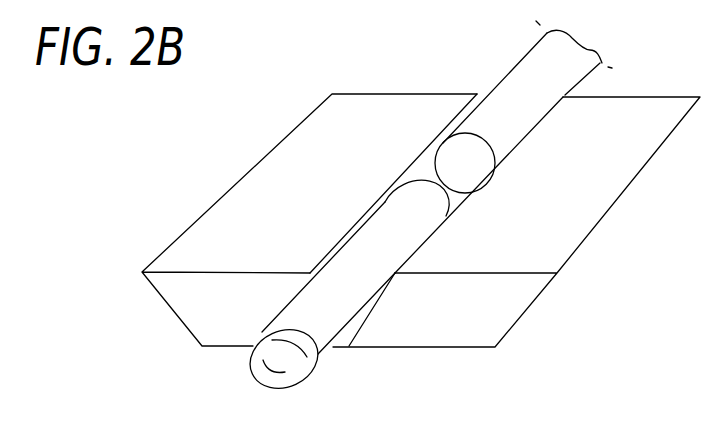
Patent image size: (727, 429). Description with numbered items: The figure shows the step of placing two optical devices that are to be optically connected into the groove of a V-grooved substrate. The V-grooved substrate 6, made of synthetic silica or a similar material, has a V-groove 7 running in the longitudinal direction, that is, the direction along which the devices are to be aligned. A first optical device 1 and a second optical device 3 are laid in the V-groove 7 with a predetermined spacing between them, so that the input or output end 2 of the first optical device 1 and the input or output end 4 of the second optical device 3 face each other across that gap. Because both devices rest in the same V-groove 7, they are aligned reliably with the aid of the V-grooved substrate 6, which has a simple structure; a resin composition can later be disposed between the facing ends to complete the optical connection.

The first optical device 1 is at (329, 348).
The input or output end 2 is at (433, 194).
The second optical device 3 is at (513, 70).
The input or output end 4 is at (480, 152).
The V-grooved substrate 6 is at (599, 255).
The V-groove 7 is at (417, 173).